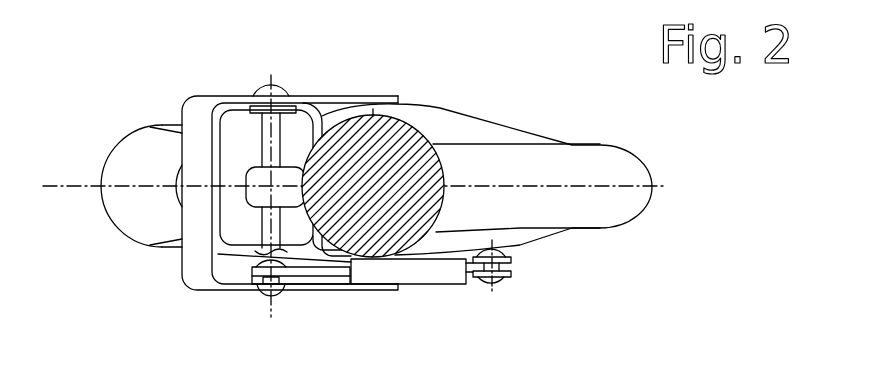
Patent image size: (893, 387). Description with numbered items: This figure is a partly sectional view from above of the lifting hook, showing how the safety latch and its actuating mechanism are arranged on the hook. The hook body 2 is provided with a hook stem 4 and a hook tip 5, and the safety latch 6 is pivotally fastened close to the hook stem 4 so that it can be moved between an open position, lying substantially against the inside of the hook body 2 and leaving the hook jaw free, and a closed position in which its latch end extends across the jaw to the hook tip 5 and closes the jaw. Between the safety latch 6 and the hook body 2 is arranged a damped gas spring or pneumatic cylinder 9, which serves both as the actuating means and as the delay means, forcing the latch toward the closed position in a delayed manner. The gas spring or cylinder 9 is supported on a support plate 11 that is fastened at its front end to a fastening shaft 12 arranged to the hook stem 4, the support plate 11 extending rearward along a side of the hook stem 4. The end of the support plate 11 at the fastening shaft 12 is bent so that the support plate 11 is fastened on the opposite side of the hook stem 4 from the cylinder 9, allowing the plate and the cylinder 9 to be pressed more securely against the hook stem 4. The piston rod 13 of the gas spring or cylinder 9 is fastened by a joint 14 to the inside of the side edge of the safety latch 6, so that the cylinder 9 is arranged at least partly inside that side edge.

The hook body 2 is at (645, 160).
The hook stem 4 is at (404, 124).
The hook tip 5 is at (123, 168).
The safety latch 6 is at (168, 277).
The gas spring or pneumatic cylinder 9 is at (438, 275).
The support plate 11 is at (331, 112).
The fastening shaft 12 is at (250, 137).
The piston rod 13 is at (326, 273).
The joint 14 is at (250, 281).